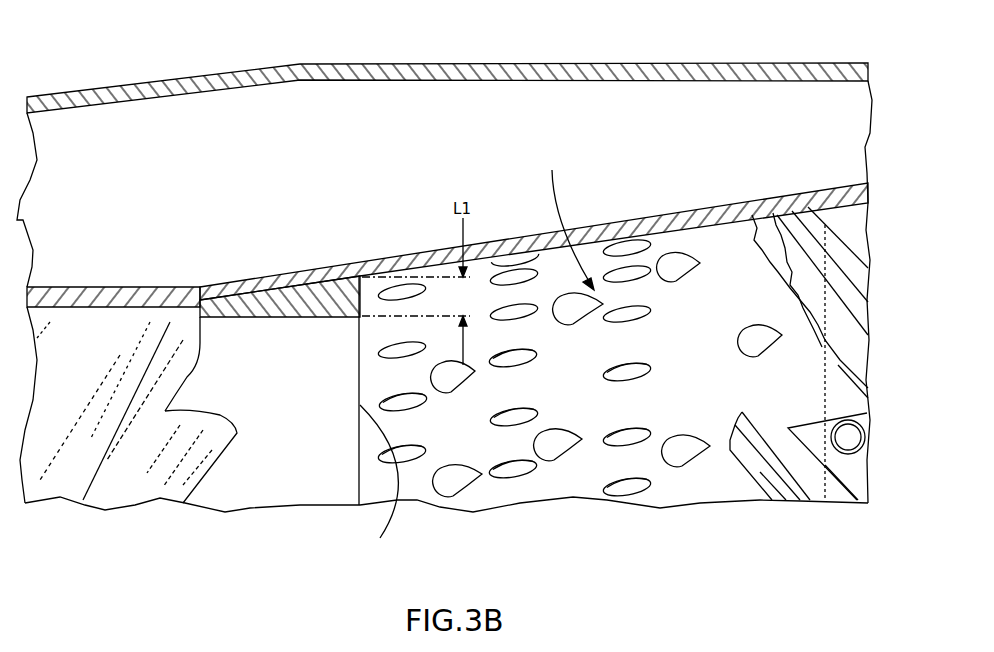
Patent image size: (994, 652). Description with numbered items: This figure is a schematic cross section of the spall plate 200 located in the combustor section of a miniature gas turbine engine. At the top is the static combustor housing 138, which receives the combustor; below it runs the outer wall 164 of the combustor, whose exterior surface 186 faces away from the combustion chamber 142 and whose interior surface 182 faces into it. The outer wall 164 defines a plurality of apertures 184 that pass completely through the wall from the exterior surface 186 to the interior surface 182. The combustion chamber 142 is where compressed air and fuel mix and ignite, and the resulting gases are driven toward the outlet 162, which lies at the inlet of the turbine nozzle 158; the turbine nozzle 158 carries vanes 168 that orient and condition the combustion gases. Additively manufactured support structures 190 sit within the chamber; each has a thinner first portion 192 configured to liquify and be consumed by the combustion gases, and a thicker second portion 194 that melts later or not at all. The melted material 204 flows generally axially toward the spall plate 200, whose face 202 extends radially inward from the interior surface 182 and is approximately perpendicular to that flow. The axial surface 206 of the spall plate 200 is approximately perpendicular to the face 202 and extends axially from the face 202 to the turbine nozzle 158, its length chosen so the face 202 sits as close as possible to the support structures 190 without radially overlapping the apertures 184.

The combustor housing 138 is at (444, 149).
The turbine nozzle 158 is at (190, 353).
The spall plate 200 is at (534, 241).
The outer wall 164 is at (660, 192).
The exterior surface 186 is at (725, 176).
The face 202 is at (378, 424).
The combustion chamber 142 is at (566, 220).
The axial surface 206 is at (275, 396).
The vanes 168 is at (49, 372).
The outlet 162 is at (222, 446).
The interior surface 182 is at (697, 316).
The apertures 184 is at (516, 405).
The melted material 204 is at (606, 402).
The first portion 192 is at (757, 272).
The second portion 194 is at (826, 358).
The support structures 190 is at (646, 360).